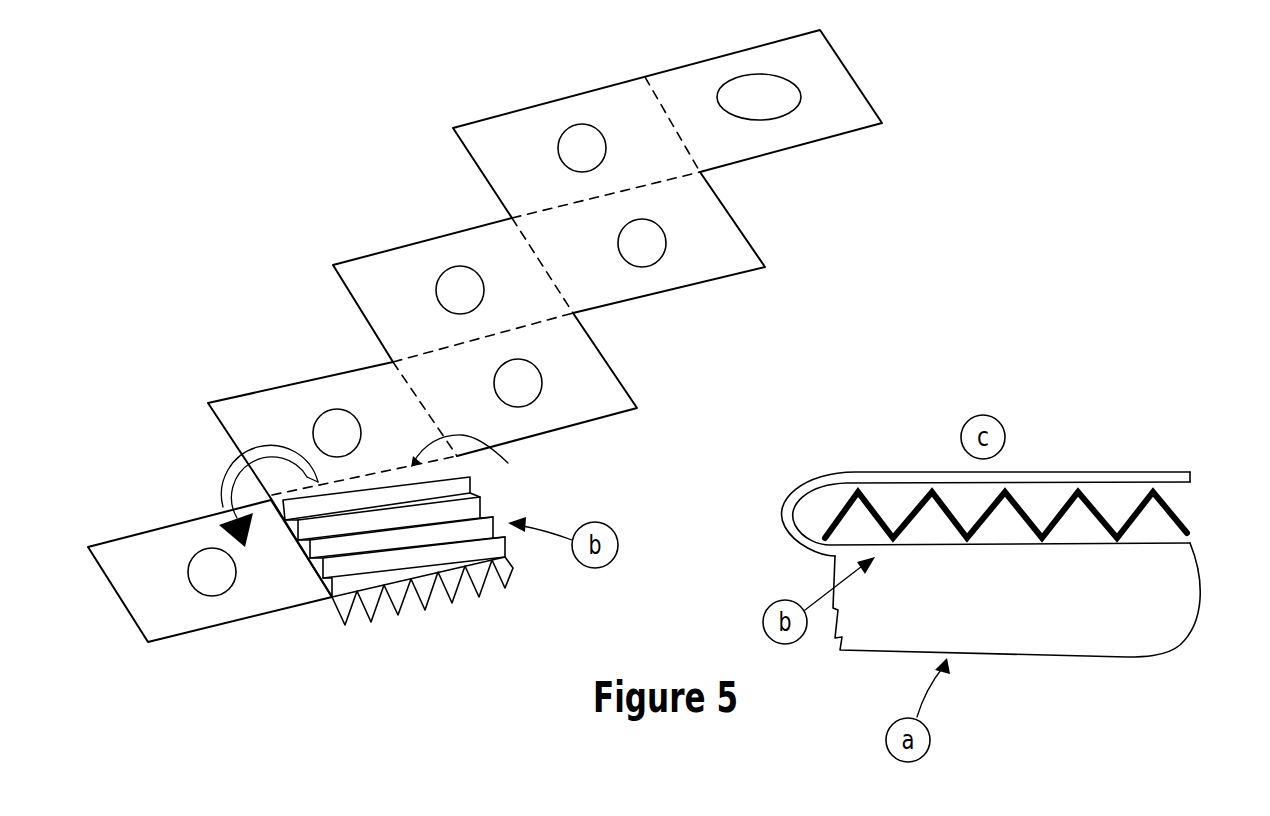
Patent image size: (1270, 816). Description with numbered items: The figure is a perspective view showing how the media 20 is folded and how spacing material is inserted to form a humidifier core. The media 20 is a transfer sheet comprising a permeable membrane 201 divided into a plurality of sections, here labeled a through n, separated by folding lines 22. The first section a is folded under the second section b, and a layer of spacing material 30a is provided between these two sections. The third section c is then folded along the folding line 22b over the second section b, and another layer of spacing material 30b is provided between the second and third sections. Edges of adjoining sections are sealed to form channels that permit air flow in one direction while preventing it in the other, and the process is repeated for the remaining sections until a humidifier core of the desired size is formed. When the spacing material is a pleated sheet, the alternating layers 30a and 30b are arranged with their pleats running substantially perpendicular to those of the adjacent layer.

The media 20 is at (385, 211).
The folding line 22 is at (432, 340).
The permeable membrane 201 is at (170, 522).
The folding line 22b is at (479, 458).
The spacing material 30b is at (485, 491).
The spacing material 30a is at (480, 599).